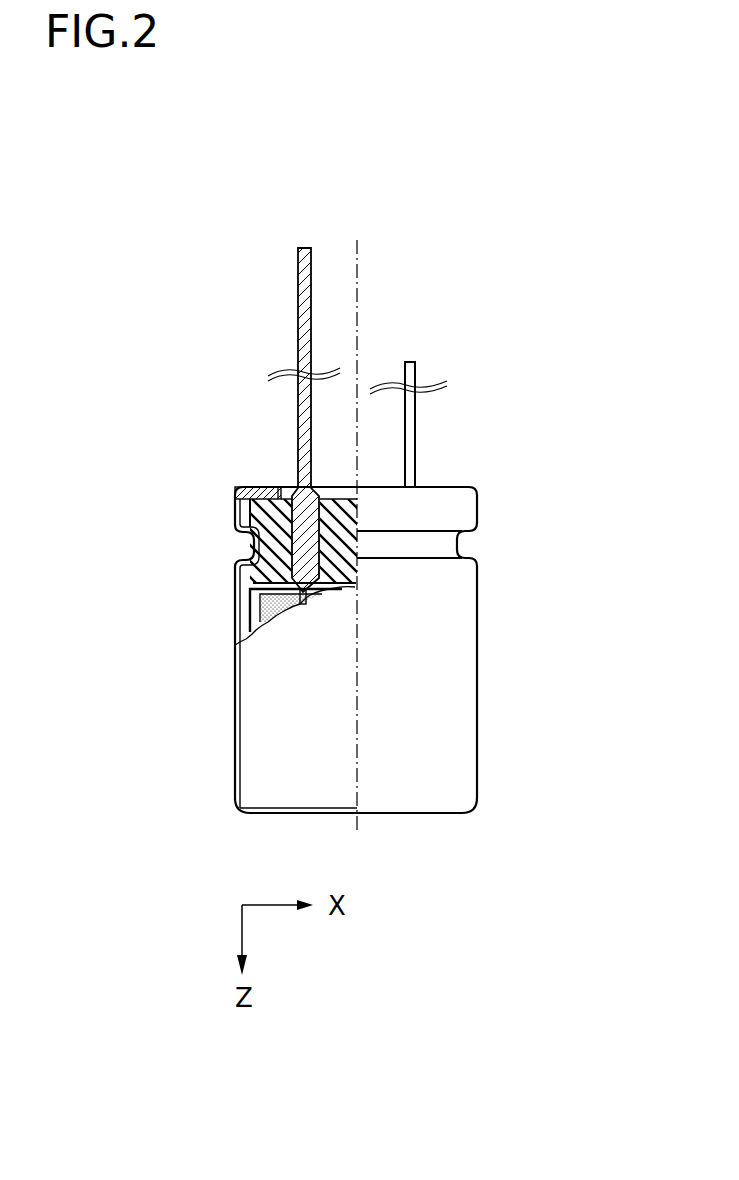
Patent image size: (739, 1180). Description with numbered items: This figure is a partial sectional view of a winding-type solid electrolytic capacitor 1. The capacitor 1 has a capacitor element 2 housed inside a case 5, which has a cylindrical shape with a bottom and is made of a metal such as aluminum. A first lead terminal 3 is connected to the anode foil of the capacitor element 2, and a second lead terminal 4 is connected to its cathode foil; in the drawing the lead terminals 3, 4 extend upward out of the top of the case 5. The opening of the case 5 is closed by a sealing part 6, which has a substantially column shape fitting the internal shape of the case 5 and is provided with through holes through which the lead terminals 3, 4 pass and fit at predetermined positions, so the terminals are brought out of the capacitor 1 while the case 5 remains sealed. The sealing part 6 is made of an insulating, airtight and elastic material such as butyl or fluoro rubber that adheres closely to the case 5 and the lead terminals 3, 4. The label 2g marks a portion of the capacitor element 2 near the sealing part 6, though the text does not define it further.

The solid electrolytic capacitor 1 is at (337, 535).
The capacitor element 2 is at (250, 628).
The outer peripheral portion of capacitor element 2g is at (247, 597).
The first lead terminal 3 is at (302, 433).
The second lead terminal 4 is at (408, 425).
The case 5 is at (463, 675).
The sealing part 6 is at (271, 516).